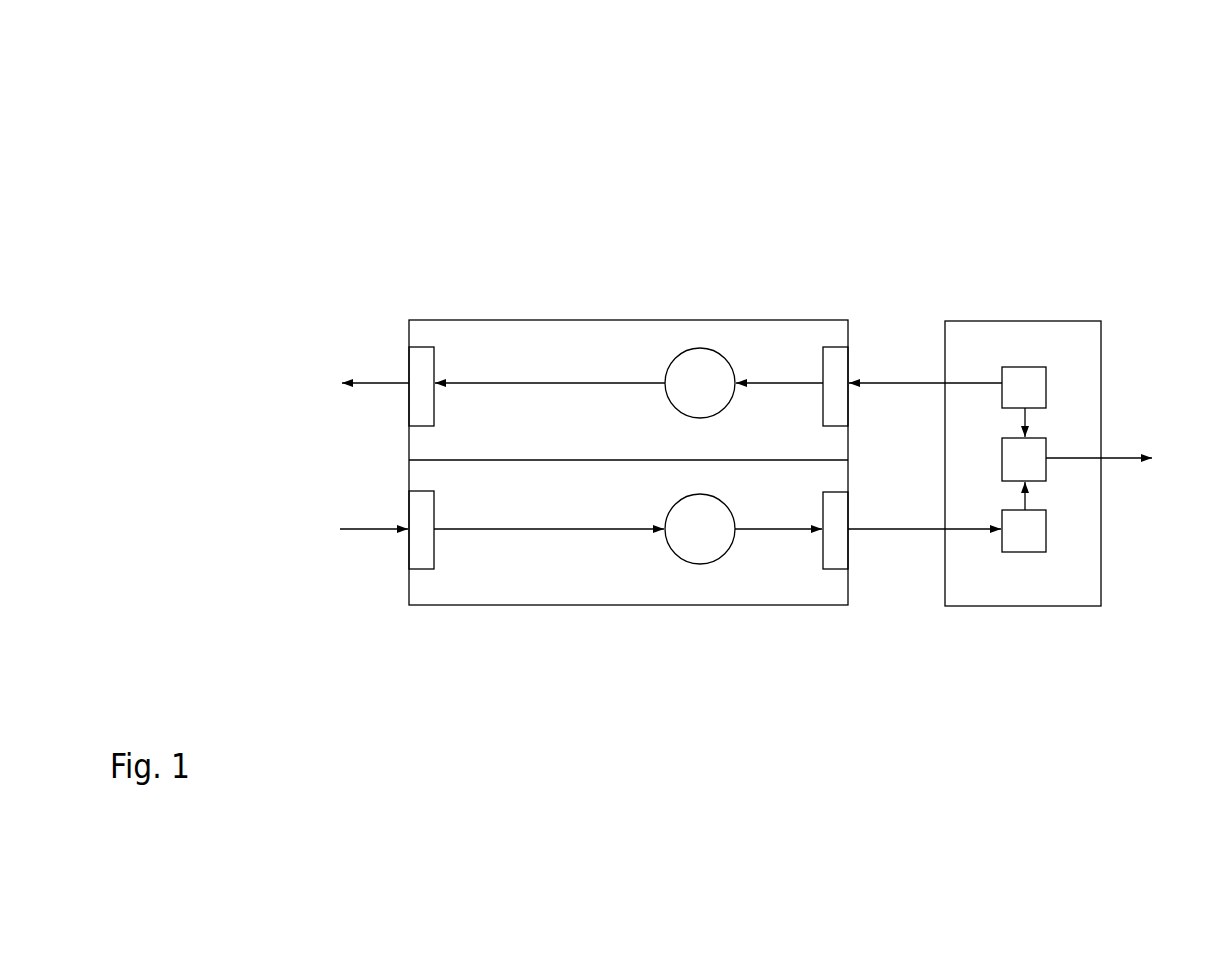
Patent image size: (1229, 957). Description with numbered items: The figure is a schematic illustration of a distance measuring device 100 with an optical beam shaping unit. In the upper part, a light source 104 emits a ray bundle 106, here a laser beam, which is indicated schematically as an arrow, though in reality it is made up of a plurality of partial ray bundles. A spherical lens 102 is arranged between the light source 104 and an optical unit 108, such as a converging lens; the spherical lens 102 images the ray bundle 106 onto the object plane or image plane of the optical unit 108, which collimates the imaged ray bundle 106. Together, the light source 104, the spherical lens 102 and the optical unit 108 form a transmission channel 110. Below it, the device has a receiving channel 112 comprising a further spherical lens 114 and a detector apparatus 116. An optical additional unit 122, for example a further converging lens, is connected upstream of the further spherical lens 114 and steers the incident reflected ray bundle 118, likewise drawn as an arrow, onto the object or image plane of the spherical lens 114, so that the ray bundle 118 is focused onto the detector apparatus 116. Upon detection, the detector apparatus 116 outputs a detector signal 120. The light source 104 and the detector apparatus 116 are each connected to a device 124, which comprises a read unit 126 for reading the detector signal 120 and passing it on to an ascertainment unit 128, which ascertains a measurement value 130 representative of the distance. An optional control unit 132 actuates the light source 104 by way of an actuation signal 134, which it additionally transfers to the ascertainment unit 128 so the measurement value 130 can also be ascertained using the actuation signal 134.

The distance measuring device 100 is at (368, 117).
The spherical lens 102 is at (701, 348).
The light source 104 is at (835, 345).
The ray bundle 106 is at (371, 381).
The optical unit 108 is at (424, 345).
The transmission channel 110 is at (616, 342).
The receiving channel 112 is at (603, 572).
The further spherical lens 114 is at (695, 563).
The detector apparatus 116 is at (833, 569).
The ray bundle 118 is at (362, 531).
The detector signal 120 is at (1023, 497).
The optical additional unit 122 is at (420, 570).
The device 124 is at (1025, 321).
The read unit 126 is at (1046, 530).
The ascertainment unit 128 is at (1046, 447).
The measurement value 130 is at (1110, 457).
The control unit 132 is at (1046, 383).
The actuation signal 134 is at (1023, 417).